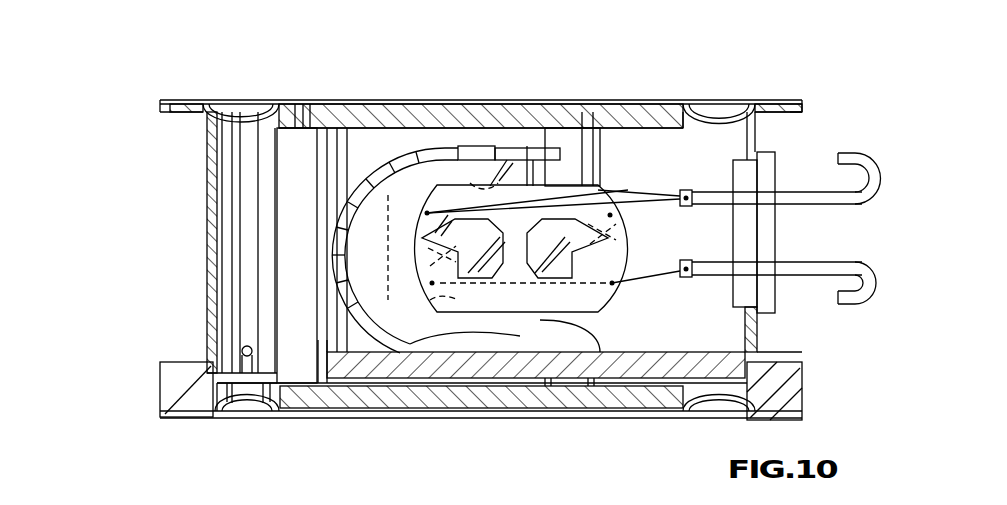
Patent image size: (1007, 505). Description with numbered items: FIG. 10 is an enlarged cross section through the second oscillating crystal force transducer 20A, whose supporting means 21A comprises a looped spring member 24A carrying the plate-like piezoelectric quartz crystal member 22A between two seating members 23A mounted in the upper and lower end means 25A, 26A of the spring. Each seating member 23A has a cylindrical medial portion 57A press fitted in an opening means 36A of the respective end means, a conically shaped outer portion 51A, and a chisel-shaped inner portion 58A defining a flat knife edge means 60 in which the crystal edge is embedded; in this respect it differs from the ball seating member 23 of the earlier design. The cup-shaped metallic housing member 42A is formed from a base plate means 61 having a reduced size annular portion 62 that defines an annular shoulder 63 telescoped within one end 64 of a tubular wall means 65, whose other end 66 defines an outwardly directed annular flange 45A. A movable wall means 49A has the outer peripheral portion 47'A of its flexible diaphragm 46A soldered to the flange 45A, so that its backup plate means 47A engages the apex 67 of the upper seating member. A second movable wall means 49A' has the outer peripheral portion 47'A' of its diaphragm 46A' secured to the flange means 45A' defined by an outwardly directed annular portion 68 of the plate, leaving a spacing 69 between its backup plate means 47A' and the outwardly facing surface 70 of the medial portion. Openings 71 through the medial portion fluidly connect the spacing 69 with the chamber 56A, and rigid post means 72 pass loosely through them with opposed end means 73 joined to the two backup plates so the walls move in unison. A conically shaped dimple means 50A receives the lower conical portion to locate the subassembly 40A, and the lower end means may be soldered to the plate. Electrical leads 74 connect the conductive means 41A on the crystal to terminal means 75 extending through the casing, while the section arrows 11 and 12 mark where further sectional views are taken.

The section line 11- 11 is at (482, 100).
The section line 12- 12 is at (175, 142).
The oscillating crystal force transducer 20A is at (840, 63).
The supporting means 21A is at (207, 268).
The piezoelectric quartz crystal member 22A is at (603, 192).
The seating member 23 is at (510, 150).
The seating member 23A is at (485, 347).
The looped spring member 24A is at (372, 190).
The end means 25A is at (522, 160).
The end means 26A is at (578, 352).
The opening means 36A is at (455, 170).
The subassembly 40A is at (405, 142).
The conductive means 41A is at (418, 252).
The cup-shaped metallic housing member 42A is at (207, 283).
The outwardly directed annular flange 45A is at (837, 103).
The annular shoulder means or flange means 45A' is at (133, 430).
The flexible diaphragm 46A is at (481, 64).
The diaphragm 46A' is at (481, 440).
The backup plate means 47A is at (719, 87).
The outer peripheral portion 47'A is at (202, 74).
The backup plate means 47A' is at (695, 425).
The outer peripheral portion 47'A' is at (199, 440).
The movable wall means 49A is at (694, 71).
The second movable wall means 49A' is at (330, 460).
The conically-shaped dimple means 50A is at (468, 348).
The outer portion 51A is at (500, 145).
The chamber 56A is at (728, 138).
The medial portion 57A is at (460, 148).
The inner portion 58A is at (427, 213).
The knife edge means 60 is at (498, 186).
The base plate means 61 is at (790, 407).
The reduced size annular portion 62 is at (757, 345).
The annular shoulder 63 is at (758, 358).
The end 64 is at (193, 250).
The tubular wall means 65 is at (207, 218).
The other end 66 is at (207, 130).
The apex 67 is at (478, 145).
The outwardly directed annular portion 68 is at (175, 385).
The spacing 69 is at (797, 382).
The outwardly facing surface 70 is at (666, 373).
The openings 71 is at (243, 346).
The rigid post means 72 is at (290, 245).
The opposed end means 73 is at (300, 104).
The electrical leads 74 is at (633, 202).
The terminal means 75 is at (710, 192).